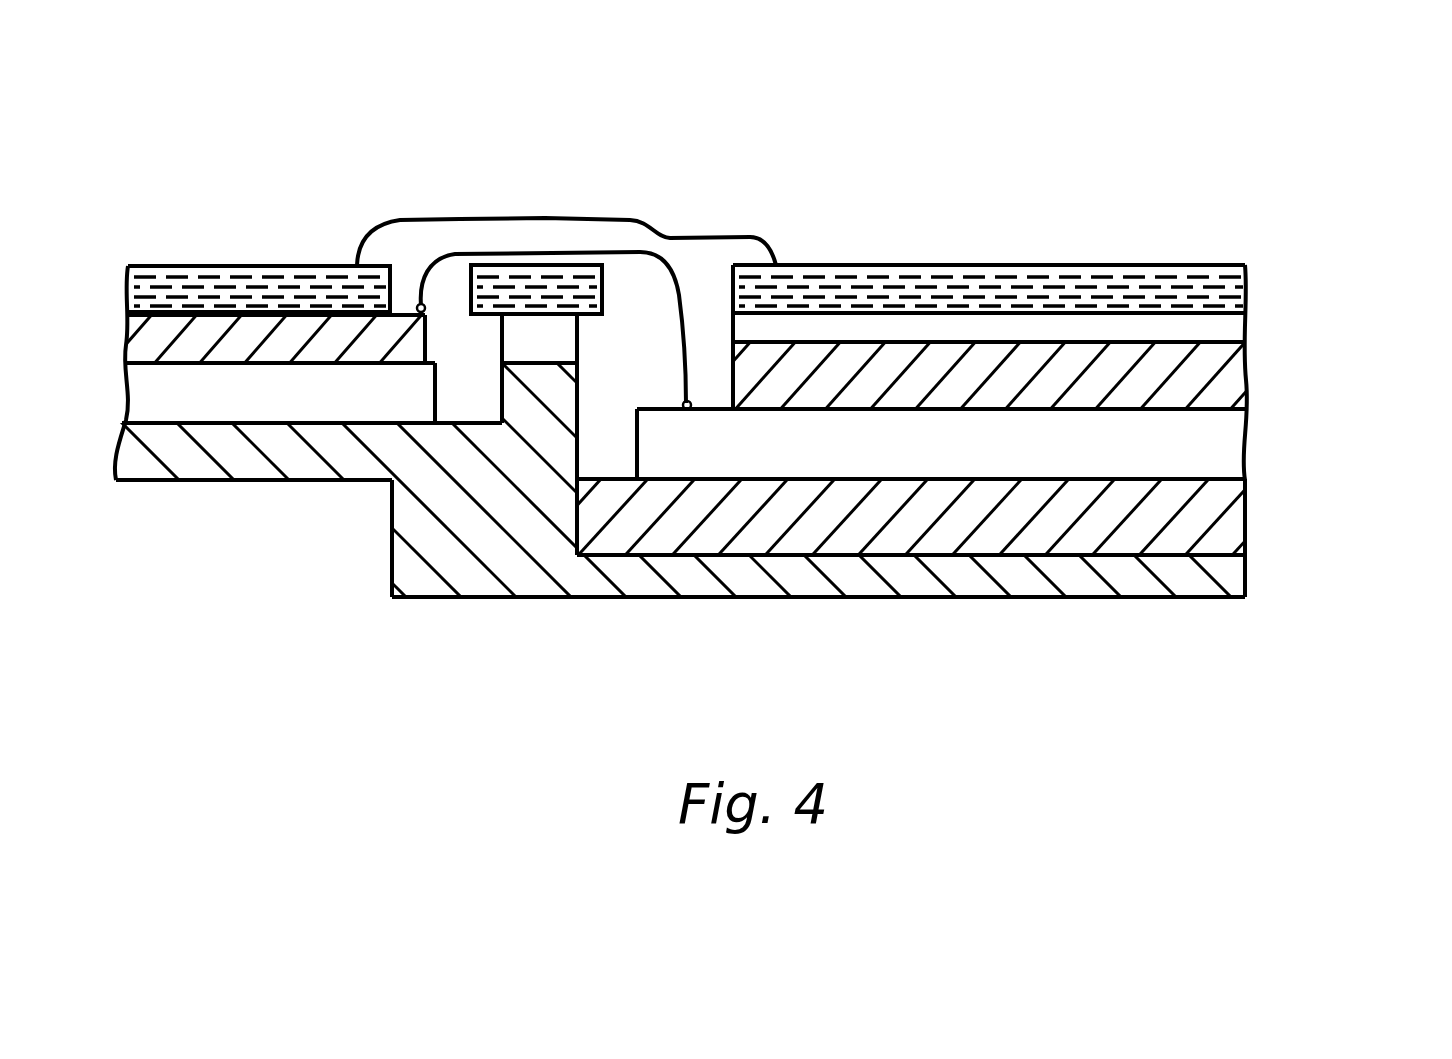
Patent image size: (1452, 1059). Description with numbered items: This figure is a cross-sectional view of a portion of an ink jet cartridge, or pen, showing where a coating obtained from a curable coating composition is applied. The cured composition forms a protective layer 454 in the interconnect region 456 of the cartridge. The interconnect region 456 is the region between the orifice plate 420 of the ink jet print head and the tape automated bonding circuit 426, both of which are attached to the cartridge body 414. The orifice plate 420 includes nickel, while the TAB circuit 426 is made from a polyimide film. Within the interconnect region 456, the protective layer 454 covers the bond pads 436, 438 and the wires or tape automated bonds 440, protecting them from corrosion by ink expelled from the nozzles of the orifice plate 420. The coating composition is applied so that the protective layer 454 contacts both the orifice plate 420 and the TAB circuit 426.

The cartridge body 414 is at (245, 462).
The orifice plate 420 is at (948, 270).
The tape automated bonding circuit 426 is at (200, 278).
The bond pad 436 is at (418, 303).
The bond pad 438 is at (690, 401).
The tape automated bonds 440 is at (622, 252).
The protective layer 454 is at (370, 245).
The interconnect region 456 is at (590, 220).